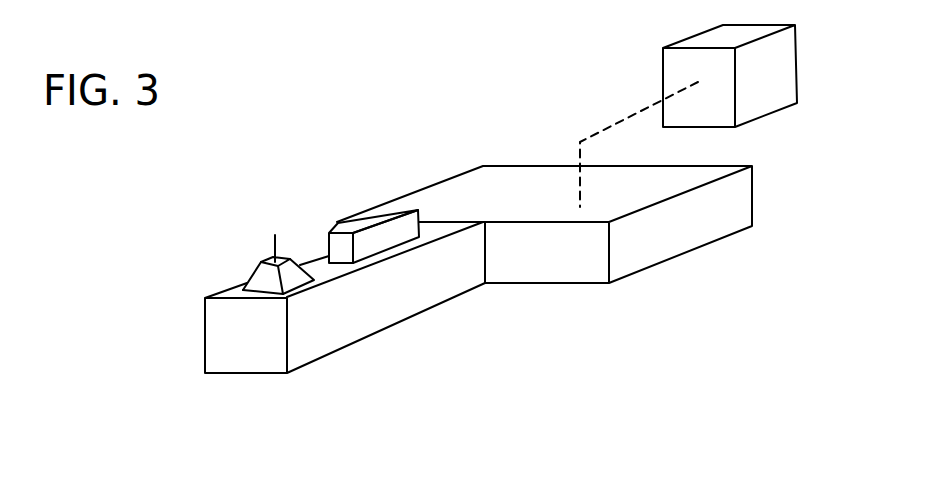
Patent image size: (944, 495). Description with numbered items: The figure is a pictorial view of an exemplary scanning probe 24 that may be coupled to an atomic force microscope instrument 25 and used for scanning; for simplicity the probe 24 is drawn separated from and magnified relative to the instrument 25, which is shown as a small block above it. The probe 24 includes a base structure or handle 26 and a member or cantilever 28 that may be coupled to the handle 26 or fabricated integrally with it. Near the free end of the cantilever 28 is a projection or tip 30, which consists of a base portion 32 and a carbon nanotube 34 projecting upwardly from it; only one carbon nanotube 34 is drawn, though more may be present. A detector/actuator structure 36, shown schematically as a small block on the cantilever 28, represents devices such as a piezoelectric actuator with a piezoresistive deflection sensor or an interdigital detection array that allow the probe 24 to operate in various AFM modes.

The scanning probe 24 is at (298, 232).
The atomic force microscope instrument 25 is at (798, 68).
The base structure or handle 26 is at (755, 200).
The cantilever 28 is at (370, 338).
The tip 30 is at (226, 317).
The base portion 32 is at (263, 280).
The carbon nanotube 34 is at (273, 250).
The detector/actuator structure 36 is at (390, 235).